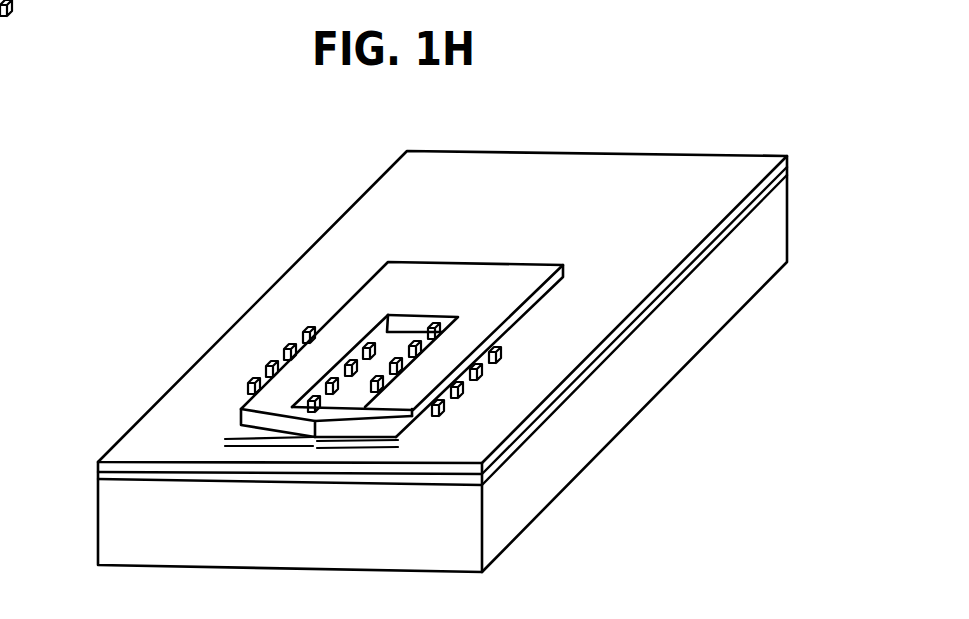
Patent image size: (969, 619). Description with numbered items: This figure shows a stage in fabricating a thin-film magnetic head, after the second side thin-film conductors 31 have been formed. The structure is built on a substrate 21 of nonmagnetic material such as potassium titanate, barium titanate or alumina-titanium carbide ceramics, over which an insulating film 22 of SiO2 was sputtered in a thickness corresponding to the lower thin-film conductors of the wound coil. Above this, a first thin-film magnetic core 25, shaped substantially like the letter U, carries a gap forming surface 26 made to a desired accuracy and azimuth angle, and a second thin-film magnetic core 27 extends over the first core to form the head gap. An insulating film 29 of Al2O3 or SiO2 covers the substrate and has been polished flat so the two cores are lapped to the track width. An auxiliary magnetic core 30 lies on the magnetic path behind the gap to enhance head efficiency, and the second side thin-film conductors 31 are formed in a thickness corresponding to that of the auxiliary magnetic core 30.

The substrate 21 is at (573, 445).
The insulating film 22 is at (98, 477).
The insulating film 29 is at (98, 463).
The auxiliary magnetic core 30 is at (503, 302).
The second side thin-film conductors 31 is at (305, 323).
The gap forming surface 26 is at (237, 436).
The second thin-film magnetic core 27 is at (396, 437).
The first thin-film magnetic core 25 is at (237, 440).